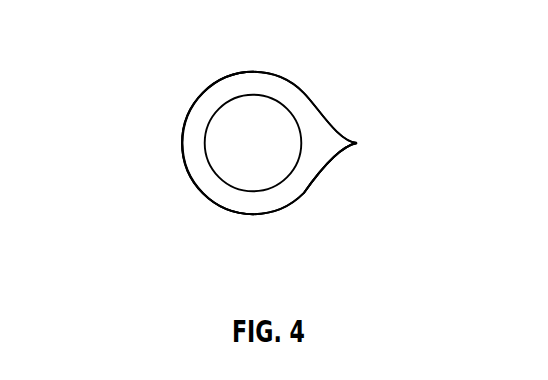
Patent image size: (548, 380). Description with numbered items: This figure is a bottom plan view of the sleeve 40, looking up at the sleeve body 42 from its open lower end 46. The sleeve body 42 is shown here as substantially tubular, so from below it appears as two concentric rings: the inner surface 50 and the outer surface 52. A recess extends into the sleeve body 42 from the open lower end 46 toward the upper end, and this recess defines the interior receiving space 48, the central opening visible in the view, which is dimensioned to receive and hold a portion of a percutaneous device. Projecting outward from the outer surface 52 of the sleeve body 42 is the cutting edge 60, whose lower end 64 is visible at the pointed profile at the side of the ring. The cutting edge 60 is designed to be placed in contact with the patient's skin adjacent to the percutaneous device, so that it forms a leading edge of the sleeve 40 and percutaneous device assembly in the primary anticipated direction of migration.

The sleeve 40 is at (341, 28).
The sleeve body 42 is at (228, 221).
The open lower end 46 is at (190, 140).
The interior receiving space 48 is at (252, 120).
The inner surface 50 is at (279, 182).
The outer surface 52 is at (200, 189).
The cutting edge 60 is at (346, 128).
The lower end 64 is at (330, 147).